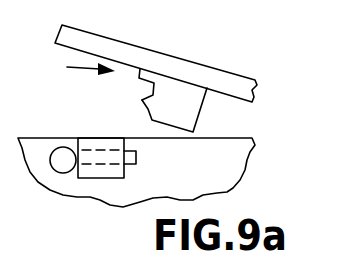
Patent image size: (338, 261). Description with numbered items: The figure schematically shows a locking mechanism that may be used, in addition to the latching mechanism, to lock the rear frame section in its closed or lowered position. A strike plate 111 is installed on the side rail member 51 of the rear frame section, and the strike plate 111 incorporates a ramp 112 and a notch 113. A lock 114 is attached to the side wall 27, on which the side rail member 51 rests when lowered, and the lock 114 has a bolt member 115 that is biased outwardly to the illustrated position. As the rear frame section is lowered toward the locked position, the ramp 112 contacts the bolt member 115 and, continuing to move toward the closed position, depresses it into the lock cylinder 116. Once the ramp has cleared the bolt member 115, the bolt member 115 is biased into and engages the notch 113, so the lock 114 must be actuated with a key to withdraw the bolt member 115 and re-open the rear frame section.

The side rail member 51 is at (97, 35).
The strike plate 111 is at (78, 65).
The notch 113 is at (151, 90).
The ramp 112 is at (143, 104).
The side wall 27 is at (228, 170).
The lock 114 is at (93, 148).
The bolt member 115 is at (136, 157).
The lock cylinder 116 is at (107, 175).